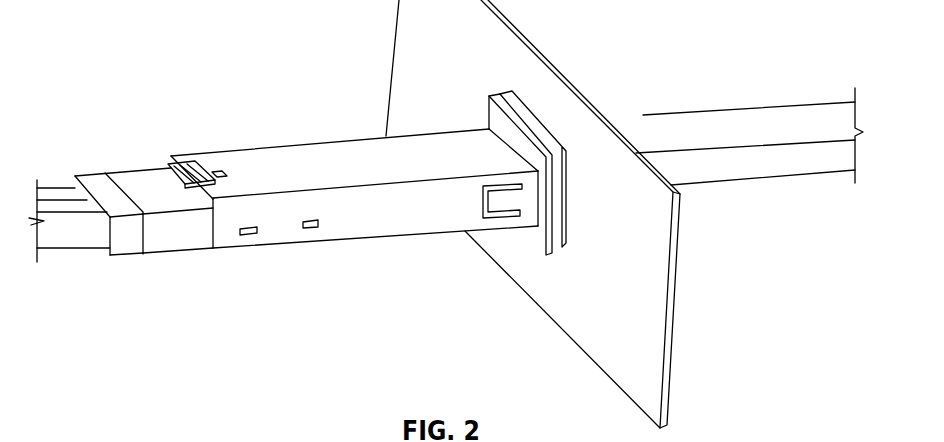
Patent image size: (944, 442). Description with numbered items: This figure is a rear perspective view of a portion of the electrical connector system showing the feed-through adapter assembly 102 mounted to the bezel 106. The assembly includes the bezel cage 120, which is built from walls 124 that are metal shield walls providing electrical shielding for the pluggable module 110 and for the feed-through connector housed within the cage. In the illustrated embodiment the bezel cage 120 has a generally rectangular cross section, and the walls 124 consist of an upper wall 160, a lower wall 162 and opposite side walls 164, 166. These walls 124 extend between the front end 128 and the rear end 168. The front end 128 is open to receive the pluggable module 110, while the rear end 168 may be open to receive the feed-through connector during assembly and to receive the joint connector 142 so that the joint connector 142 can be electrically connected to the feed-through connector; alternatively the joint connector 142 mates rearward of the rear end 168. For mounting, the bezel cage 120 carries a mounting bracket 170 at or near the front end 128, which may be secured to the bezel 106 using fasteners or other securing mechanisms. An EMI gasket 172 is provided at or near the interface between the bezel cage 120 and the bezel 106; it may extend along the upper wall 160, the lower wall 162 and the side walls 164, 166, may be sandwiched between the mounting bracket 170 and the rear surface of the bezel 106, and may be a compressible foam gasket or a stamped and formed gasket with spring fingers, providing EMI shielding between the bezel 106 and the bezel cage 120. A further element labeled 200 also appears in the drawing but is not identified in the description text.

The feed-through adapter assembly 102 is at (320, 256).
The bezel 106 is at (602, 338).
The pluggable module 110 is at (648, 113).
The bezel cage 120 is at (303, 154).
The walls 124 is at (385, 228).
The front end 128 is at (528, 221).
The joint connector 142 is at (167, 241).
The upper wall 160 is at (350, 157).
The lower wall 162 is at (344, 238).
The side wall 164 is at (424, 213).
The side wall 166 is at (238, 148).
The rear end 168 is at (210, 239).
The mounting bracket 170 is at (541, 246).
The EMI gasket 172 is at (556, 241).
The mounting structure 200 is at (268, 441).